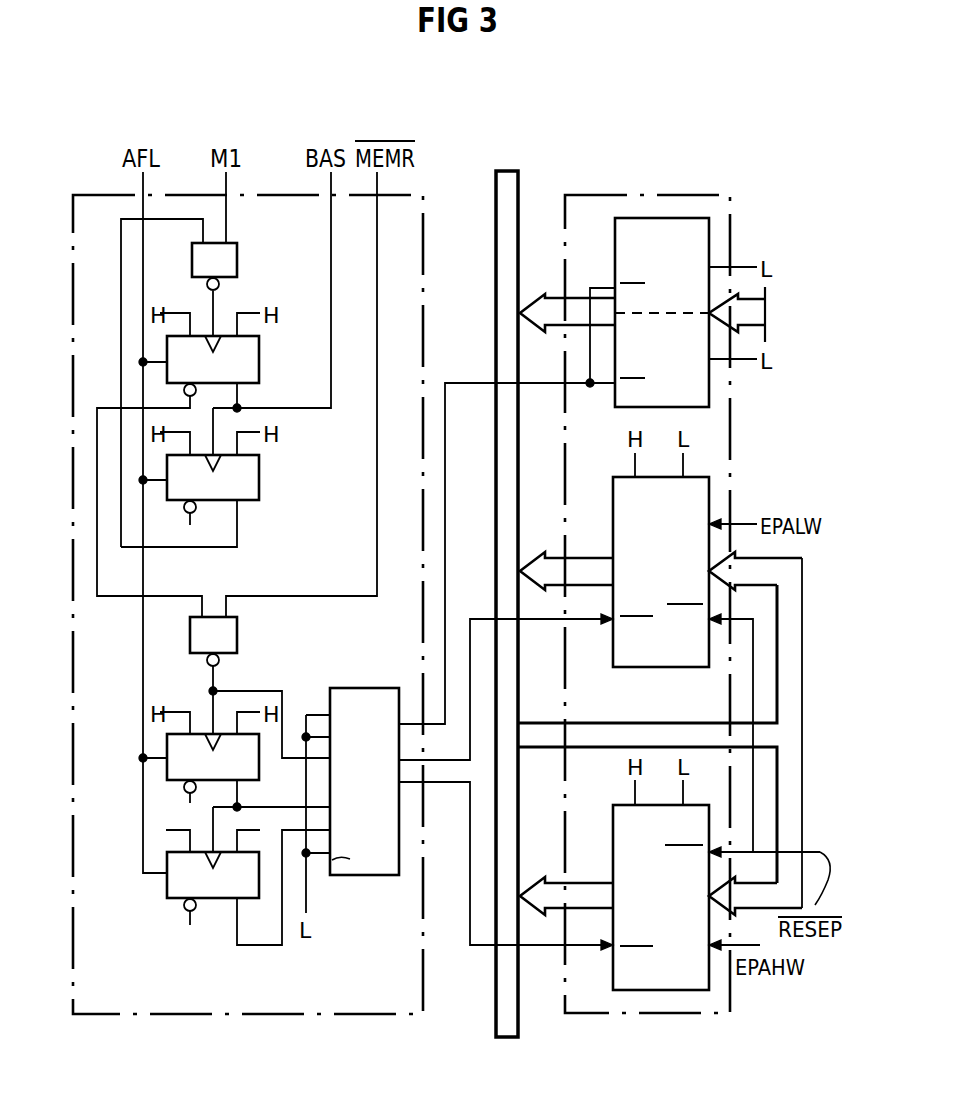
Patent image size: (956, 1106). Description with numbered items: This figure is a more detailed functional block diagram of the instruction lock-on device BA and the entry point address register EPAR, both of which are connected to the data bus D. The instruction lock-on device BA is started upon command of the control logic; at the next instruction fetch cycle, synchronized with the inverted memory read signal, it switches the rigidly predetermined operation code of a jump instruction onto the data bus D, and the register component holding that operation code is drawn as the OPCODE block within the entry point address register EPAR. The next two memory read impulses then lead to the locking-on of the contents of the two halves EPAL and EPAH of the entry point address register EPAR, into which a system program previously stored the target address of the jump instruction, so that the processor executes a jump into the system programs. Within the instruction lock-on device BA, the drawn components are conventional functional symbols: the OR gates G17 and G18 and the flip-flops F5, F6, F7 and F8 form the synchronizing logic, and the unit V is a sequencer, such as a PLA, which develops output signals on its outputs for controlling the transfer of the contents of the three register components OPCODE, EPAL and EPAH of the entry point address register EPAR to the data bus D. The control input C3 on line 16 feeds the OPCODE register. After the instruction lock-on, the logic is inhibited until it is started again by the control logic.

The control input line C3 to op-code register 16 is at (768, 338).
The control signal C3 is at (788, 314).
The OR gate G17 is at (237, 262).
The OR gate G18 is at (237, 636).
The flip-flop F5 is at (213, 366).
The flip-flop F6 is at (213, 490).
The flip-flop F7 is at (213, 768).
The flip-flop F8 is at (213, 888).
The sequencer V is at (385, 872).
The instruction lock-on device BA is at (353, 1005).
The data bus D is at (520, 590).
The entry point address register EPAR is at (675, 1010).
The op-code register OPCODE is at (662, 312).
The low half of the entry point address register EPAL is at (661, 572).
The high half of the entry point address register EPAH is at (661, 897).